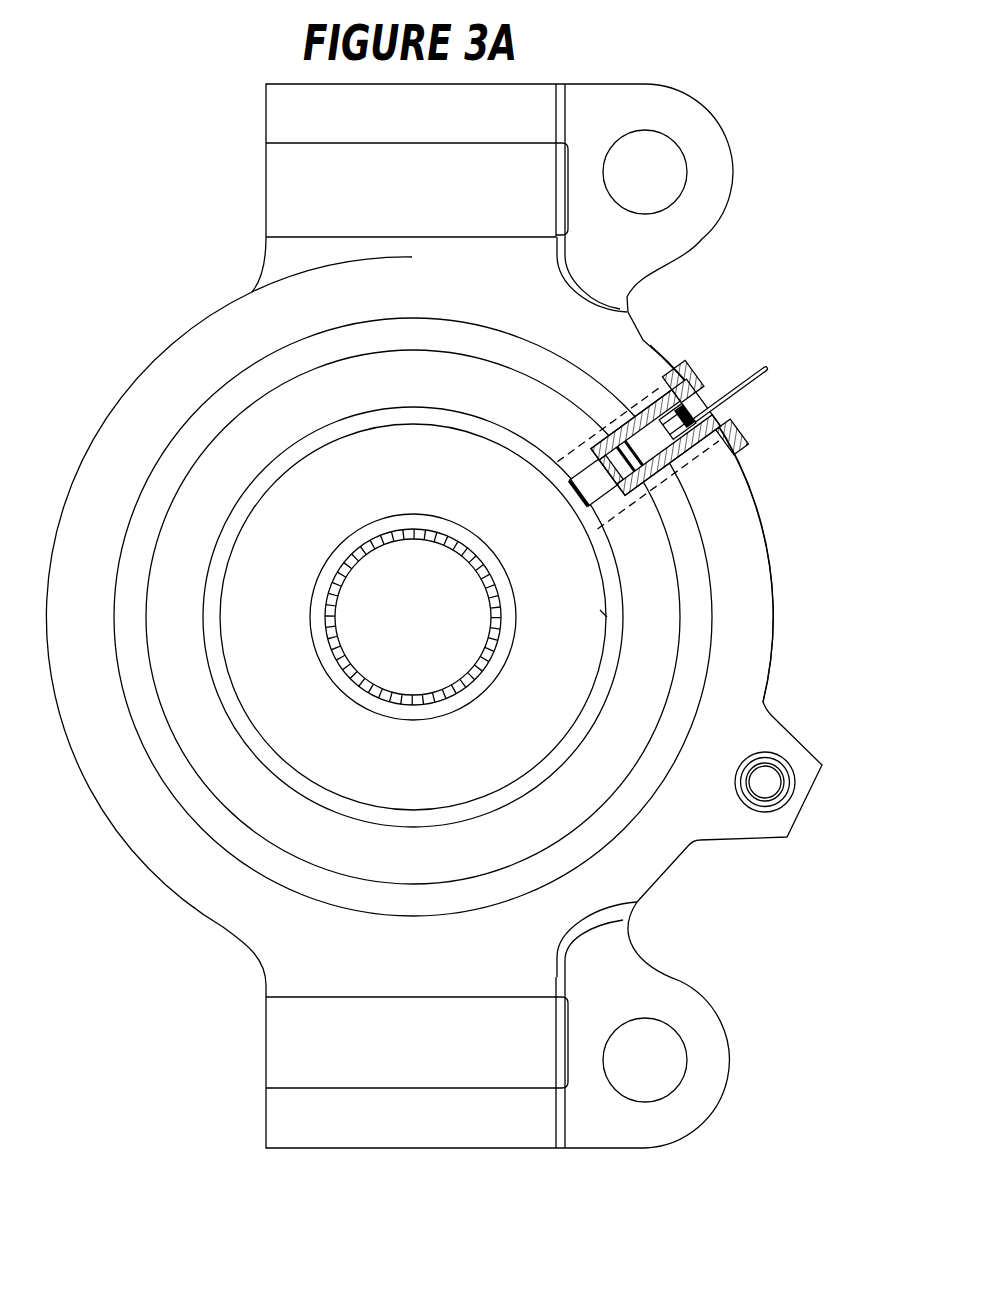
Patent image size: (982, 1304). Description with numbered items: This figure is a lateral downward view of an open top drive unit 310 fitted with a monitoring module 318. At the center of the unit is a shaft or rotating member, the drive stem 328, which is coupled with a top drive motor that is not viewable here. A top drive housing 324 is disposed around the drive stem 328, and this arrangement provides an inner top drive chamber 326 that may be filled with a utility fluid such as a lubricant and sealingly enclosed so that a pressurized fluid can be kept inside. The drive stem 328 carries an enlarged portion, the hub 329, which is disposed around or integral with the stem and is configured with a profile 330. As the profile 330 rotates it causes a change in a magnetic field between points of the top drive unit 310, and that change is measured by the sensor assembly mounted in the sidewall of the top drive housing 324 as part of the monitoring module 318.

The top drive unit 310 is at (434, 616).
The monitoring module 318 is at (672, 434).
The top drive housing 324 is at (745, 612).
The inner top drive chamber 326 is at (545, 458).
The drive stem 328 is at (330, 605).
The hub 329 is at (583, 652).
The profile 330 is at (617, 614).